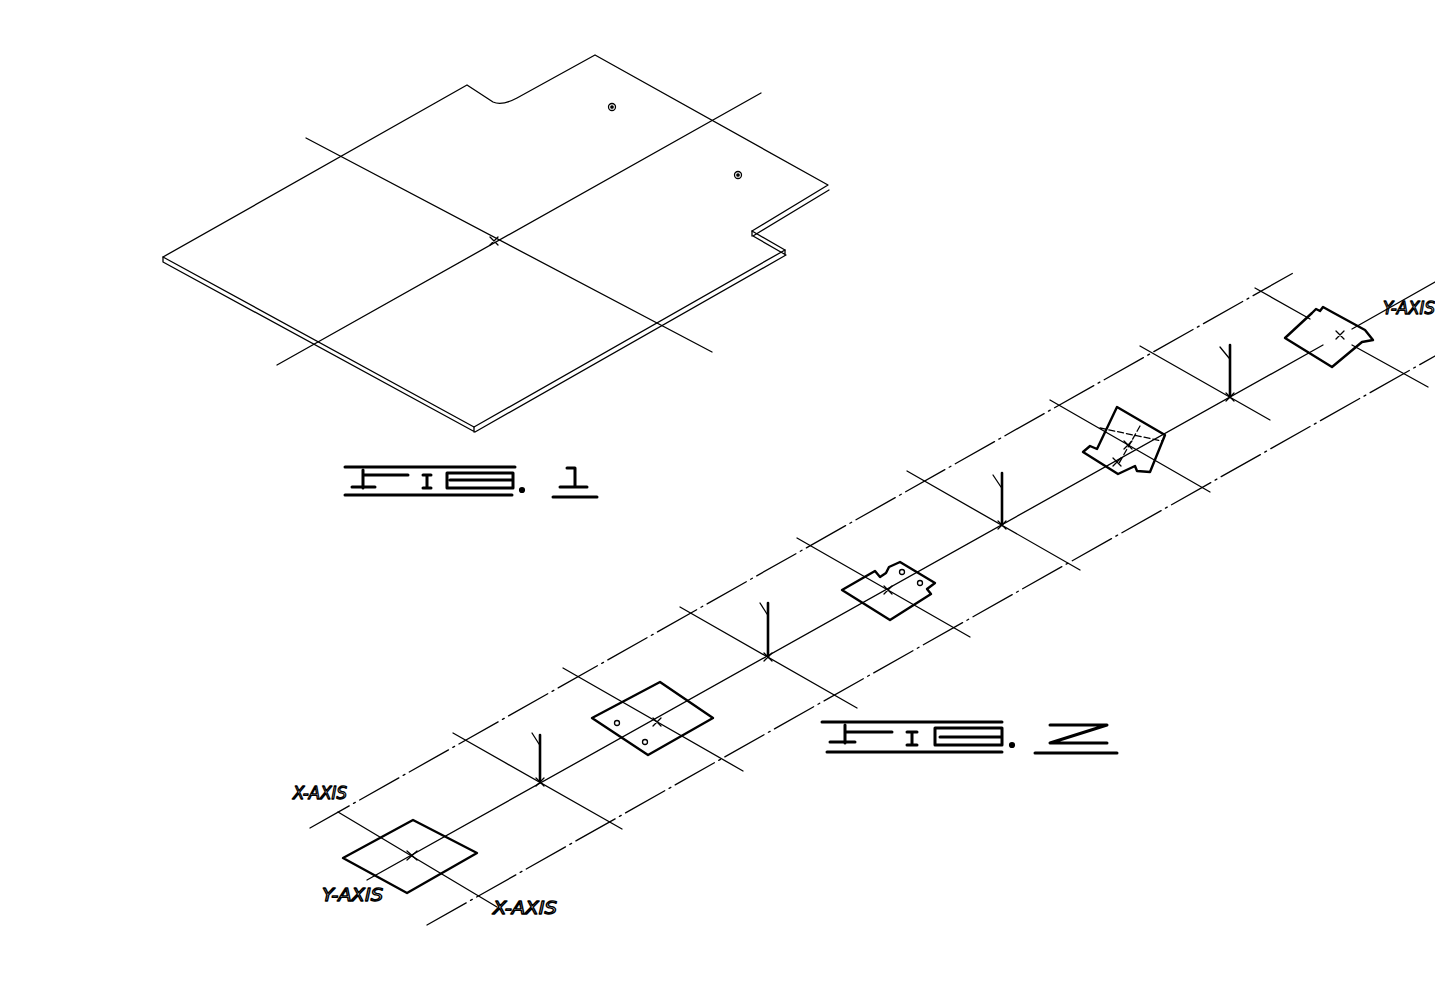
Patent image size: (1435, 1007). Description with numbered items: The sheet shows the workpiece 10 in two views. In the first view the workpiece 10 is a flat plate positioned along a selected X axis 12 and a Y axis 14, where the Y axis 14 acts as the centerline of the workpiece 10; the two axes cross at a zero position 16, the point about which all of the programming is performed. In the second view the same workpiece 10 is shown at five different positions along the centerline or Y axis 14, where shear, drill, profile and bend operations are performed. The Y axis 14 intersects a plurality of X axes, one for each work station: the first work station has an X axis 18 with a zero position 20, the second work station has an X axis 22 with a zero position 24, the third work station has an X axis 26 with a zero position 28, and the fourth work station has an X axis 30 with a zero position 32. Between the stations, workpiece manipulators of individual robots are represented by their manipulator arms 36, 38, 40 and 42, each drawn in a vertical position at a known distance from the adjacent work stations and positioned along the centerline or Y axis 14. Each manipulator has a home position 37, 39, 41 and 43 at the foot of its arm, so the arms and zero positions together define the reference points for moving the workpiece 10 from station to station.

In FIG. 1, the workpiece 10 is at (466, 108).
In FIG. 2, the workpiece 10 is at (414, 825).
In FIG. 1, the X axis 12 is at (595, 291).
In FIG. 1, the Y axis 14 is at (400, 297).
In FIG. 2, the Y axis 14 is at (507, 800).
In FIG. 1, the zero position 16 is at (494, 239).
In FIG. 2, the X axis of first work station 18 is at (357, 821).
In FIG. 2, the zero position of first work station 20 is at (412, 856).
In FIG. 2, the X axis of second work station 22 is at (593, 681).
In FIG. 2, the zero position of second work station 24 is at (657, 718).
In FIG. 2, the X axis of third work station 26 is at (827, 551).
In FIG. 2, the zero position of third work station 28 is at (888, 588).
In FIG. 2, the X axis of fourth work station 30 is at (1060, 392).
In FIG. 2, the zero position of fourth work station 32 is at (1118, 477).
In FIG. 2, the manipulator arm 36 is at (542, 750).
In FIG. 2, the home position 37 is at (543, 782).
In FIG. 2, the manipulator arm 38 is at (770, 620).
In FIG. 2, the home position 39 is at (772, 657).
In FIG. 2, the manipulator arm 40 is at (1004, 487).
In FIG. 2, the home position 41 is at (1005, 525).
In FIG. 2, the manipulator arm 42 is at (1232, 362).
In FIG. 2, the home position 43 is at (1233, 397).